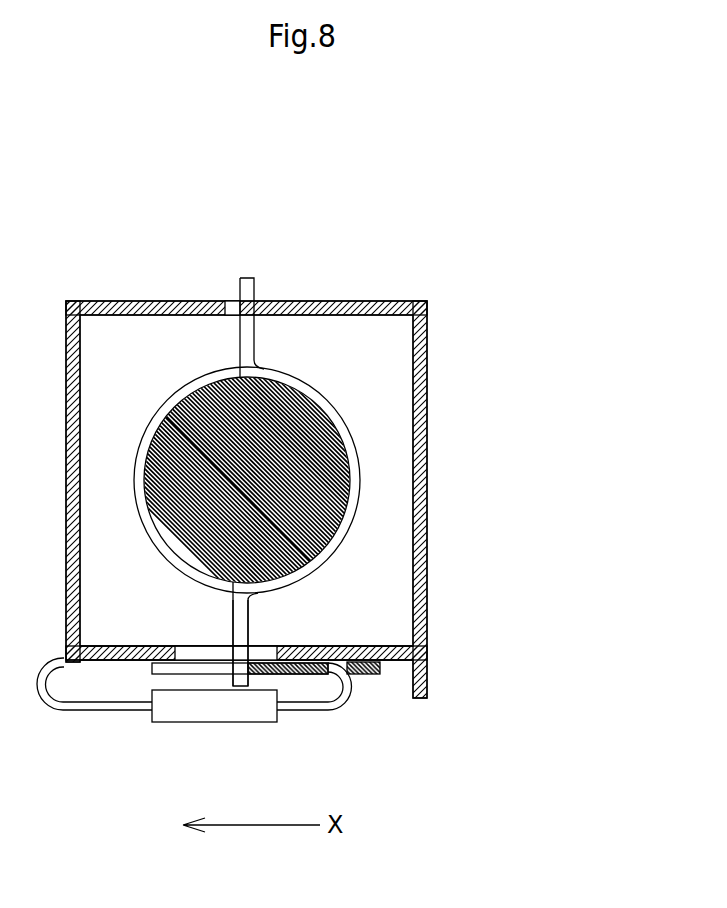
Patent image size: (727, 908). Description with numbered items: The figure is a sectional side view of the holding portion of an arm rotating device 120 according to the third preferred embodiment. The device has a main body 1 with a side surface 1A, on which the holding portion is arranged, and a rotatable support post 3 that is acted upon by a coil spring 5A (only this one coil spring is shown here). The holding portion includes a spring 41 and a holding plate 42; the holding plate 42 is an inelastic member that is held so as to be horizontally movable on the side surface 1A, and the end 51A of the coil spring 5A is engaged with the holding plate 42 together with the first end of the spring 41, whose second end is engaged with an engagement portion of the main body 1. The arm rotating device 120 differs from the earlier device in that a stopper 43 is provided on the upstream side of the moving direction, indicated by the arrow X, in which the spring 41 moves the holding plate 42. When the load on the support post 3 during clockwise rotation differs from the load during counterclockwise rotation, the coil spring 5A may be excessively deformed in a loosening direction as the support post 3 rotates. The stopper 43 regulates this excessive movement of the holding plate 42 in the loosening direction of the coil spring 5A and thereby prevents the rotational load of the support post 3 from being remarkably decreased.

The arm rotating device 120 is at (93, 197).
The main body 1 is at (427, 301).
The side surface 1A is at (408, 658).
The support post 3 is at (333, 535).
The coil spring 5A is at (362, 458).
The end of coil spring 51A is at (248, 632).
The spring 41 is at (175, 722).
The holding plate 42 is at (303, 675).
The stopper 43 is at (428, 672).